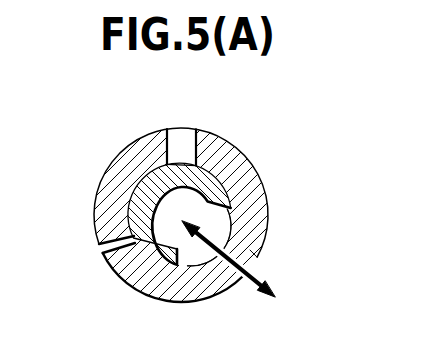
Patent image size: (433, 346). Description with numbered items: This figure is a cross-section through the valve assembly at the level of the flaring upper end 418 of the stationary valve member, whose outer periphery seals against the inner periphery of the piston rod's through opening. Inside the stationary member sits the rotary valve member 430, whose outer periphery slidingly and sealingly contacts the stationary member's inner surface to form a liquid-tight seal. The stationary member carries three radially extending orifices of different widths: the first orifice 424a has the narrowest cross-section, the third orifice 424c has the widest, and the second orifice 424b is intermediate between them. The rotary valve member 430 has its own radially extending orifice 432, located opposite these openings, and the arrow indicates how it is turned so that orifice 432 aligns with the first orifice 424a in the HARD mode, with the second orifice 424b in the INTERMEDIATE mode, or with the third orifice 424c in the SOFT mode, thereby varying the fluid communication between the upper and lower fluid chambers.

The flaring upper end 418 is at (247, 158).
The rotary valve member 430 is at (133, 203).
The radially extending orifice 432 is at (218, 220).
The first orifice 424a is at (255, 264).
The second orifice 424b is at (107, 258).
The third orifice 424c is at (188, 140).